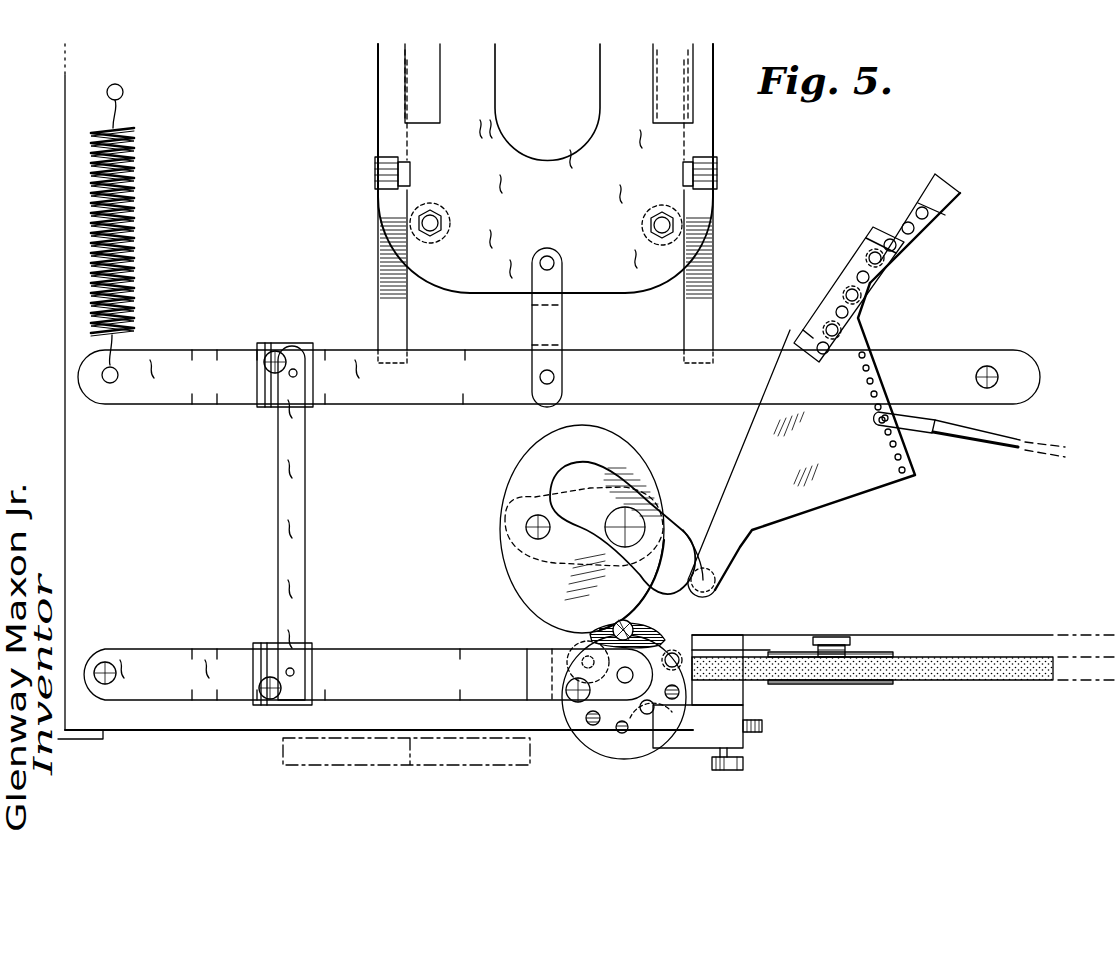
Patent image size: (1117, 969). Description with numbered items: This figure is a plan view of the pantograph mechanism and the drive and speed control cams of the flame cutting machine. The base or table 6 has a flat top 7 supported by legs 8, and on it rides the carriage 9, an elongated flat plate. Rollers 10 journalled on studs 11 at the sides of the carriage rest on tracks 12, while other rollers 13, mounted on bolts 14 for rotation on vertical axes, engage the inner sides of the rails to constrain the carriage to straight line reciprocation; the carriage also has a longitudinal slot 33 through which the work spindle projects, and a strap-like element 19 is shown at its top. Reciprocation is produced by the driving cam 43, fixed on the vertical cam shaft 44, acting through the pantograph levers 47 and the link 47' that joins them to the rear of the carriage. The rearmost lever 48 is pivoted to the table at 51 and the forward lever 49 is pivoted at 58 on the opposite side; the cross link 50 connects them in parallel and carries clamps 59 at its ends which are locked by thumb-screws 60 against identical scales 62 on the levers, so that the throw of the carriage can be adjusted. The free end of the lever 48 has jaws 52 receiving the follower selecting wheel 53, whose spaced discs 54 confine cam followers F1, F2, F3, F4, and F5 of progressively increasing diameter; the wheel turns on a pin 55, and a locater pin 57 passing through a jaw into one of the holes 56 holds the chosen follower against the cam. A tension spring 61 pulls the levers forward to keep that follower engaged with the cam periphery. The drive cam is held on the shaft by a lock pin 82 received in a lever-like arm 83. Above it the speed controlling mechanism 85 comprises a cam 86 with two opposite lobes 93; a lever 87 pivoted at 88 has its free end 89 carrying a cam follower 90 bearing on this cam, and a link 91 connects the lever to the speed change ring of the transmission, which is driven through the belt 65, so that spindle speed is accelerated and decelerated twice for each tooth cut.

The base or table 6 is at (62, 265).
The top 7 is at (100, 462).
The legs 8 is at (72, 740).
The carriage 9 is at (559, 206).
The rollers 10 is at (405, 172).
The studs 11 is at (372, 167).
The tracks 12 is at (378, 292).
The rollers 13 is at (438, 206).
The bolts 14 is at (428, 236).
The strap 19 is at (422, 98).
The longitudinal slot 33 is at (498, 84).
The driving cam 43 is at (525, 568).
The cam shaft 44 is at (645, 527).
The pantograph levers 47 is at (179, 527).
The link 47' is at (569, 327).
The lever 48 is at (402, 665).
The lever 49 is at (165, 350).
The cross link 50 is at (277, 541).
The pivot 51 is at (106, 662).
The jaws 52 is at (593, 724).
The follower selecting wheel 53 is at (605, 748).
The discs 54 is at (567, 700).
The pin 55 is at (737, 628).
The holes 56 is at (693, 705).
The locater pin 57 is at (607, 688).
The pivot 58 is at (988, 366).
The clamps 59 is at (287, 342).
The thumb-screws 60 is at (265, 368).
The tension spring 61 is at (128, 198).
The scales 62 is at (190, 368).
The belt 65 is at (930, 657).
The lock pin 82 is at (526, 528).
The lever-like arm 83 is at (527, 492).
The speed controlling mechanism 85 is at (917, 300).
The cam 86 is at (610, 500).
The lever 87 is at (785, 497).
The pivot 88 is at (848, 290).
The free end 89 is at (745, 546).
The cam follower 90 is at (712, 609).
The link 91 is at (950, 440).
The lobes 93 is at (570, 470).
The cam follower F1 is at (600, 735).
The cam follower F2 is at (690, 680).
The cam follower F3 is at (638, 628).
The cam follower F4 is at (568, 642).
The cam follower F5 is at (650, 745).